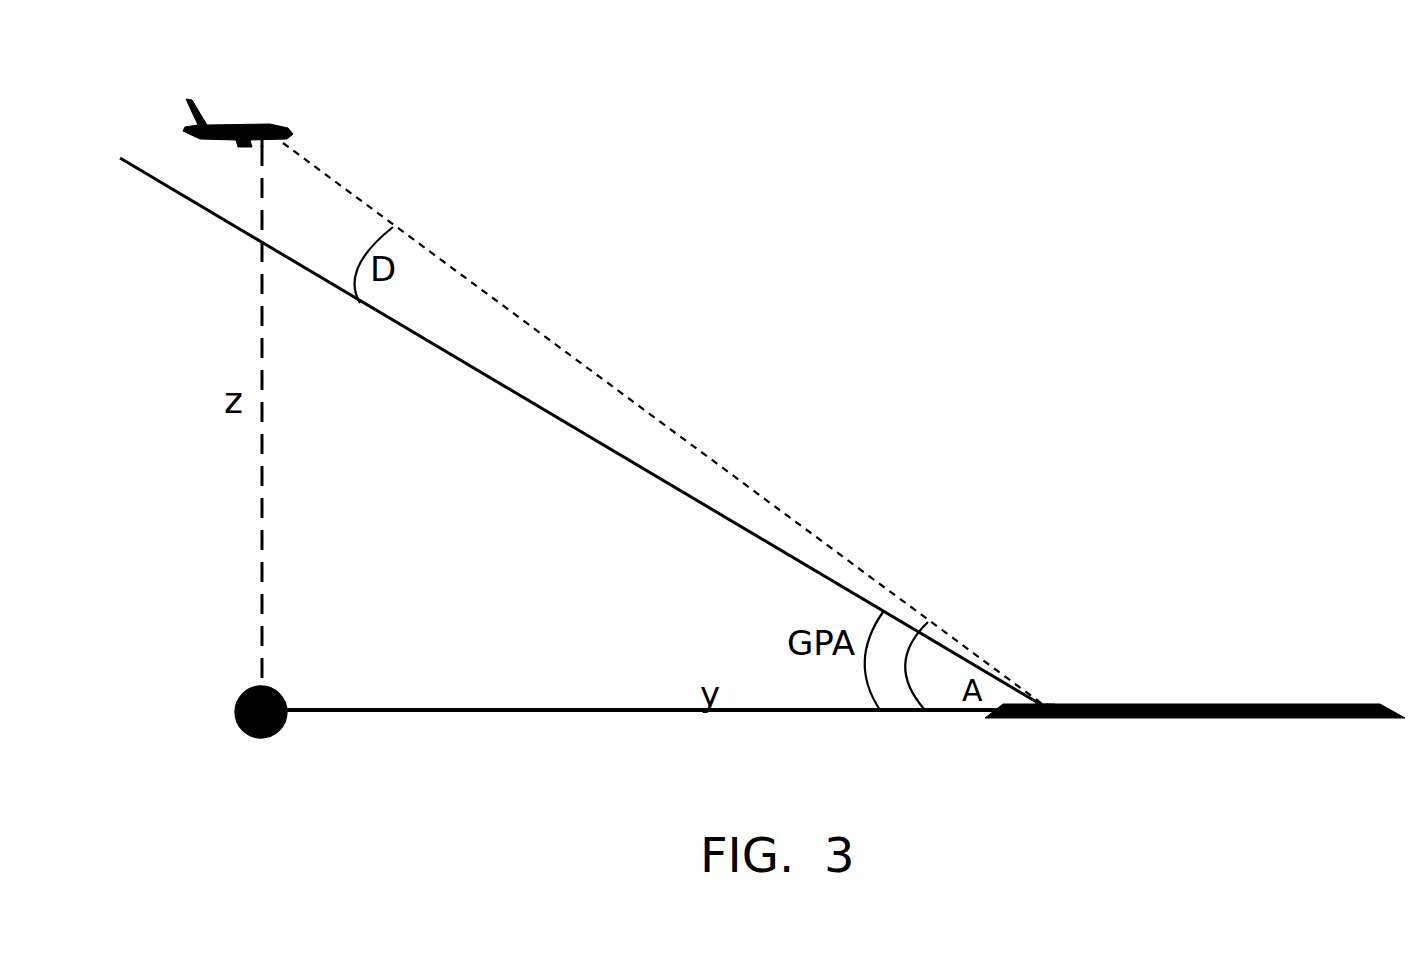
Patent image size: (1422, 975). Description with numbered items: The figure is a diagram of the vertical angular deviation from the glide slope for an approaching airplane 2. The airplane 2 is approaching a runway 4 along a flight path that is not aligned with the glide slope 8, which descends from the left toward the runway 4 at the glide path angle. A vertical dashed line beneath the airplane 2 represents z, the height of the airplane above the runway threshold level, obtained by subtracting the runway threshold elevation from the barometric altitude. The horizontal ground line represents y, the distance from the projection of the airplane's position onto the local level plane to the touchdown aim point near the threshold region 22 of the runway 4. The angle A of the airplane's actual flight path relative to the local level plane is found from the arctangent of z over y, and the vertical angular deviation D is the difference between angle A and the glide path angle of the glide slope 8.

The airplane 2 is at (238, 124).
The glide slope 8 is at (517, 395).
The runway 4 is at (1330, 701).
The runway threshold 22 is at (1043, 703).